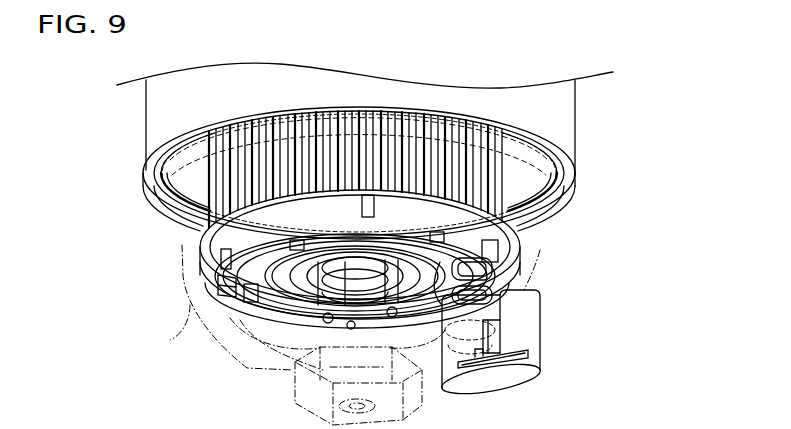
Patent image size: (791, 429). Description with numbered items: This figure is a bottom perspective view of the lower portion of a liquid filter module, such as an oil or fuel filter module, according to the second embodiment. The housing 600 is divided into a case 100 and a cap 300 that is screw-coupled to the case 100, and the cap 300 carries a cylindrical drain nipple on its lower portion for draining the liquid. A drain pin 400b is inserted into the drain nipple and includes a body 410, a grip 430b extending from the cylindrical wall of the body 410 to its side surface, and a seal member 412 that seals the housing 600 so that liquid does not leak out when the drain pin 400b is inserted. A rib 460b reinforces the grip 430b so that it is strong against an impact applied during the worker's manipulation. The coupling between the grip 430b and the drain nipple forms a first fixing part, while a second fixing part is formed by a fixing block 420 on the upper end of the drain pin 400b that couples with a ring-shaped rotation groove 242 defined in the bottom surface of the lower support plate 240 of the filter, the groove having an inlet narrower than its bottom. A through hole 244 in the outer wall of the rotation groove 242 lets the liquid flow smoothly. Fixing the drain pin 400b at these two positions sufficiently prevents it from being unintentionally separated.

The case 100 is at (154, 121).
The housing 600 is at (88, 122).
The cap 300 is at (182, 245).
The through hole 244 is at (217, 257).
The lower support plate 240 is at (213, 287).
The rotation groove 242 is at (247, 280).
The fixing block 420 is at (533, 228).
The seal member 412 is at (518, 290).
The grip 430b is at (520, 332).
The drain pin 400b is at (636, 242).
The rib 460b is at (513, 363).
The body 410 is at (463, 382).